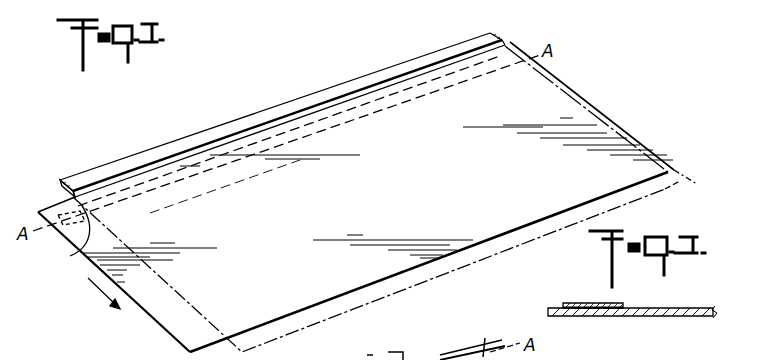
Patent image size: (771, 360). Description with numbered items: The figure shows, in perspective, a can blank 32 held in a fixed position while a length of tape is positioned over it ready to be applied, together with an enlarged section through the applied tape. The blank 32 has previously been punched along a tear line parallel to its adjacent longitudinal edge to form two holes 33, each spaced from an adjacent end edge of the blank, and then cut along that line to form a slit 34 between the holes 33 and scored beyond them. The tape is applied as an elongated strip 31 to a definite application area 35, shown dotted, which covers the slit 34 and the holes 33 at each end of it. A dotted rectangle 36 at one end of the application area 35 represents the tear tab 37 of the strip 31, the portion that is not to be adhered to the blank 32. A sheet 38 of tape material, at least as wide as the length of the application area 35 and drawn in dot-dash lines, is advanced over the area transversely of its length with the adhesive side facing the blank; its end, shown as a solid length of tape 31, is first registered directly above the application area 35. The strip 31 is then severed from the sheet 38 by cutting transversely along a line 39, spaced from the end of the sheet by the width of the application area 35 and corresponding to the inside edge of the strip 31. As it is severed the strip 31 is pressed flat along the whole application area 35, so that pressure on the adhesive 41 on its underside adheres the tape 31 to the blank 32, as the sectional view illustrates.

In FIG. 1, the tape strip 31 is at (260, 112).
In FIG. 3, the tape strip 31 is at (585, 291).
In FIG. 1, the can blank 32 is at (172, 322).
In FIG. 3, the can blank 32 is at (681, 308).
In FIG. 1, the holes 33 is at (77, 248).
In FIG. 1, the slit 34 is at (403, 103).
In FIG. 3, the slit 34 is at (587, 312).
In FIG. 1, the application area 35 is at (222, 176).
In FIG. 1, the dotted rectangle 36 is at (63, 208).
In FIG. 1, the tear tab 37 is at (96, 190).
In FIG. 1, the sheet of tape material 38 is at (693, 183).
In FIG. 1, the cutting line 39 is at (334, 100).
In FIG. 3, the adhesive 41 is at (625, 307).